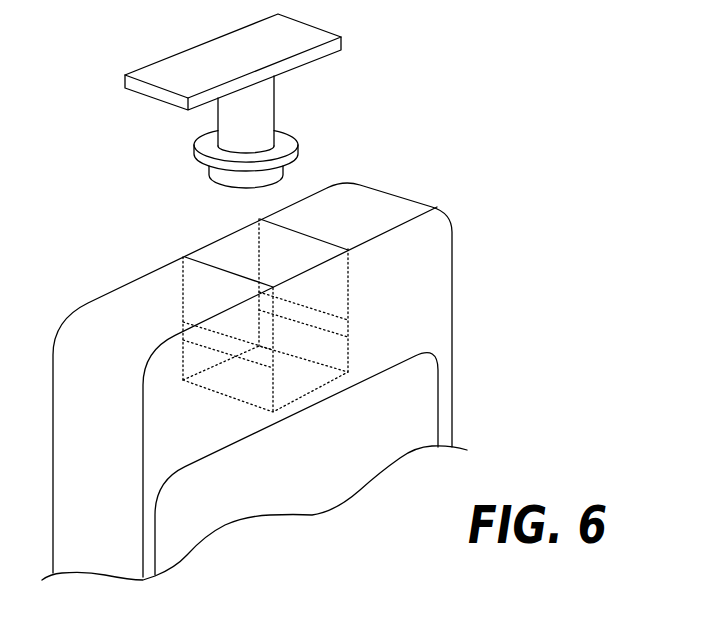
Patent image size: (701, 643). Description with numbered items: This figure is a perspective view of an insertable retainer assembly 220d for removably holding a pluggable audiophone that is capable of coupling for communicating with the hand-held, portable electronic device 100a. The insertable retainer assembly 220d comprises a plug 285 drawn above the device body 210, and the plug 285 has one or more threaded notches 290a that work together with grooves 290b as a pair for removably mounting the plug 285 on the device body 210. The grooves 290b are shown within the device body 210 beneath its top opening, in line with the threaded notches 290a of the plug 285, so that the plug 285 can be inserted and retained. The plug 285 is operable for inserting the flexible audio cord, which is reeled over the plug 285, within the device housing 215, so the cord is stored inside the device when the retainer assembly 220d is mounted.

The hand-held, portable electronic device 100a is at (336, 297).
The device body 210 is at (286, 333).
The device housing 215 is at (385, 193).
The insertable retainer assembly 220d is at (313, 162).
The plug 285 is at (167, 82).
The threaded notches 290a is at (192, 157).
The grooves 290b is at (313, 318).